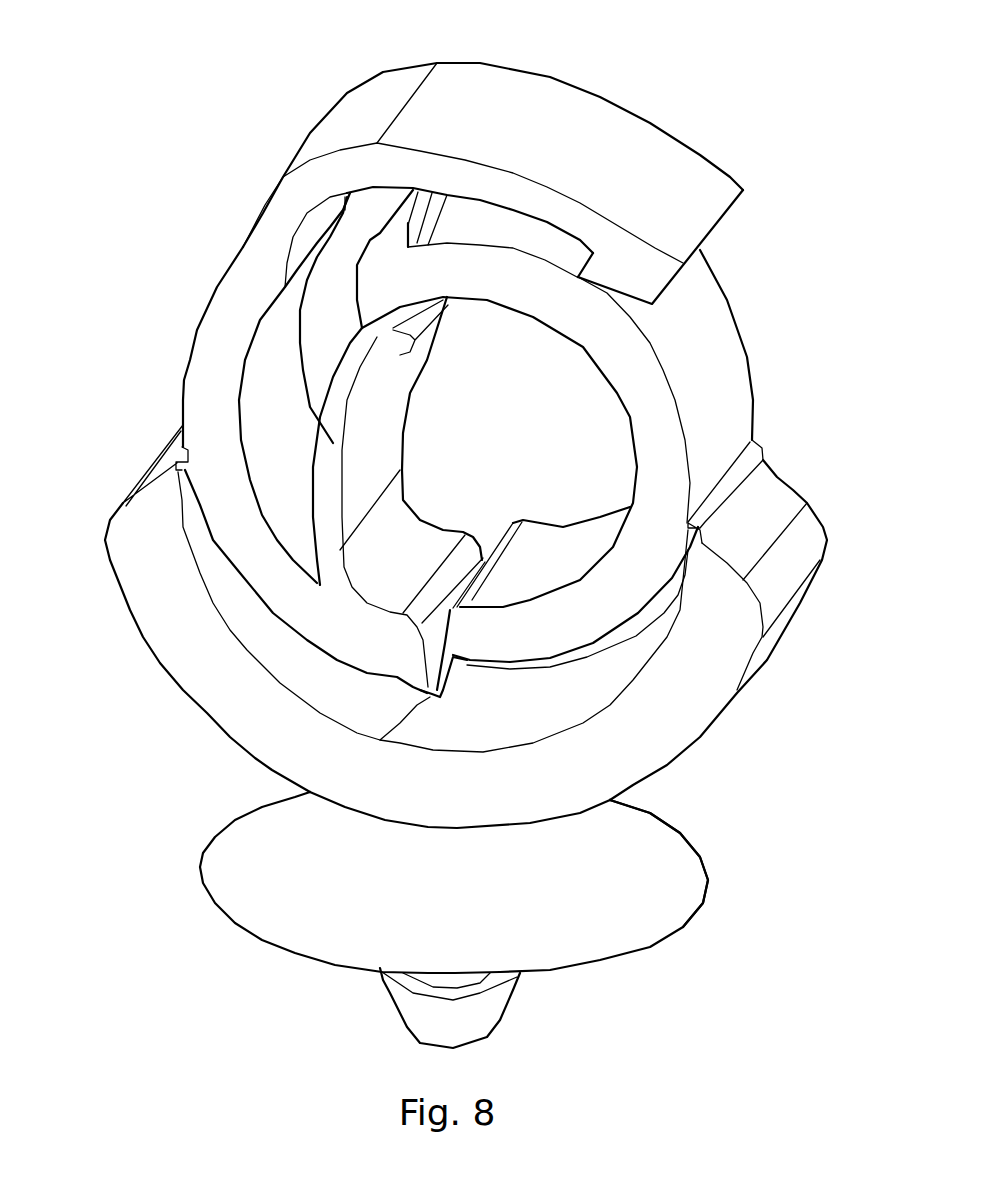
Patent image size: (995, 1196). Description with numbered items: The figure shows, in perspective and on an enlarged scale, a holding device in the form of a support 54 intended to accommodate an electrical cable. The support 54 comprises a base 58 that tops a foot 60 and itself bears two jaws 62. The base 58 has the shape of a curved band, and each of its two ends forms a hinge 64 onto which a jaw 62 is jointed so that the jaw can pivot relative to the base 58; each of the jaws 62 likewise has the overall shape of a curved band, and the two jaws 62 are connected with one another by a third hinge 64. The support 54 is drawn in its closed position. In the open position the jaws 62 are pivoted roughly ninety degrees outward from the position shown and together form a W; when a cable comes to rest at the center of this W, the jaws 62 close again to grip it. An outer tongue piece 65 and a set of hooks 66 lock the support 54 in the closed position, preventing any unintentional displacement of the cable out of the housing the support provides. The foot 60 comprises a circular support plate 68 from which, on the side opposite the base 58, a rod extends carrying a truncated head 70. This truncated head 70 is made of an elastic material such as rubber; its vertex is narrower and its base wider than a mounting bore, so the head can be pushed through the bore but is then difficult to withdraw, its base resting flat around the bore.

The support 54 is at (140, 735).
The base 58 is at (657, 747).
The foot 60 is at (613, 943).
The jaws 62 is at (213, 320).
The hinge 64 is at (182, 427).
The outer tongue piece 65 is at (557, 100).
The hooks 66 is at (405, 237).
The circular support plate 68 is at (683, 927).
The truncated head 70 is at (480, 1013).